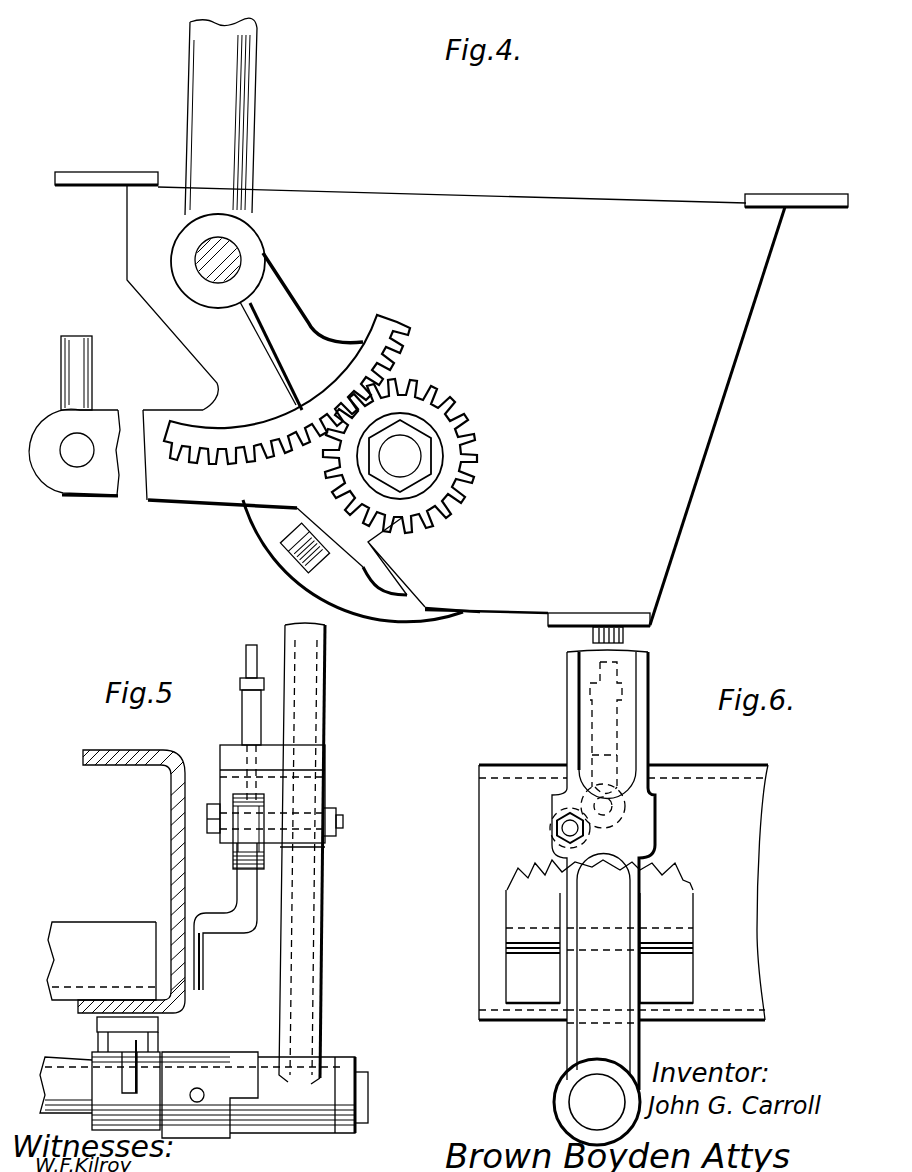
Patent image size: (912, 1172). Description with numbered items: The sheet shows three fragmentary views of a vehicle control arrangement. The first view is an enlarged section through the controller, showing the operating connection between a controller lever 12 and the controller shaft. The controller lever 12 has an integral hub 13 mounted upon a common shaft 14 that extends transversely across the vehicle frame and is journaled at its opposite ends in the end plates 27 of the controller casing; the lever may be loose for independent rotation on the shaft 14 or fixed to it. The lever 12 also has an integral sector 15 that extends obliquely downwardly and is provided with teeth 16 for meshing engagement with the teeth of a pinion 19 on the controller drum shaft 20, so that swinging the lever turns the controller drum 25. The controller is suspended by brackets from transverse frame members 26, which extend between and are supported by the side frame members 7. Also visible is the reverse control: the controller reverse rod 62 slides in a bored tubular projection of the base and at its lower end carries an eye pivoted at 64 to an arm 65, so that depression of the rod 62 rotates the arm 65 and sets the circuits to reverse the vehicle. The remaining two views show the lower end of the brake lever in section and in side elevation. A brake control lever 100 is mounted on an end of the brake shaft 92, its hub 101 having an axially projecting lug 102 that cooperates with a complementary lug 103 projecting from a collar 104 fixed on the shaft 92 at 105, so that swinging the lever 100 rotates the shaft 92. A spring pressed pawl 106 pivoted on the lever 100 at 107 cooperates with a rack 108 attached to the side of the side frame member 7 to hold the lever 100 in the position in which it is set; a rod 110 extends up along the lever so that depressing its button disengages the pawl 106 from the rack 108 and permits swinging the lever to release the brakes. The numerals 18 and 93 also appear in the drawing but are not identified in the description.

In FIG. 5, the side frame member 7 is at (116, 768).
In FIG. 6, the side frame member 7 is at (752, 892).
In FIG. 4, the controller lever 12 is at (246, 112).
In FIG. 4, the hub 13 is at (243, 237).
In FIG. 4, the shaft 14 is at (230, 256).
In FIG. 4, the sector 15 is at (360, 336).
In FIG. 4, the teeth 16 is at (404, 336).
In FIG. 4, the pinion 18 is at (418, 389).
In FIG. 4, the pinion 19 is at (440, 425).
In FIG. 4, the controller drum shaft 20 is at (420, 456).
In FIG. 4, the controller drum 25 is at (253, 523).
In FIG. 4, the transverse frame member 26 is at (100, 182).
In FIG. 4, the end plate 27 is at (700, 416).
In FIG. 4, the controller reverse rod 62 is at (80, 388).
In FIG. 4, the pivot 64 is at (75, 463).
In FIG. 4, the arm 65 is at (157, 487).
In FIG. 5, the shaft 92 is at (55, 1072).
In FIG. 6, the shaft 92 is at (605, 1095).
In FIG. 5, the pin 93 is at (160, 1048).
In FIG. 5, the brake control lever 100 is at (310, 892).
In FIG. 6, the brake control lever 100 is at (566, 1043).
In FIG. 5, the hub 101 is at (330, 1060).
In FIG. 6, the hub 101 is at (555, 1100).
In FIG. 5, the lug 102 is at (203, 1092).
In FIG. 6, the lug 102 is at (570, 1128).
In FIG. 5, the lug 103 is at (245, 1058).
In FIG. 5, the collar 104 is at (124, 1112).
In FIG. 5, the fixing point 105 is at (272, 877).
In FIG. 5, the pawl 106 is at (240, 845).
In FIG. 6, the pawl 106 is at (548, 845).
In FIG. 5, the pivot 107 is at (340, 821).
In FIG. 6, the pivot 107 is at (562, 822).
In FIG. 5, the rack 108 is at (252, 925).
In FIG. 6, the rack 108 is at (518, 898).
In FIG. 5, the rod 110 is at (258, 646).
In FIG. 6, the rod 110 is at (567, 728).